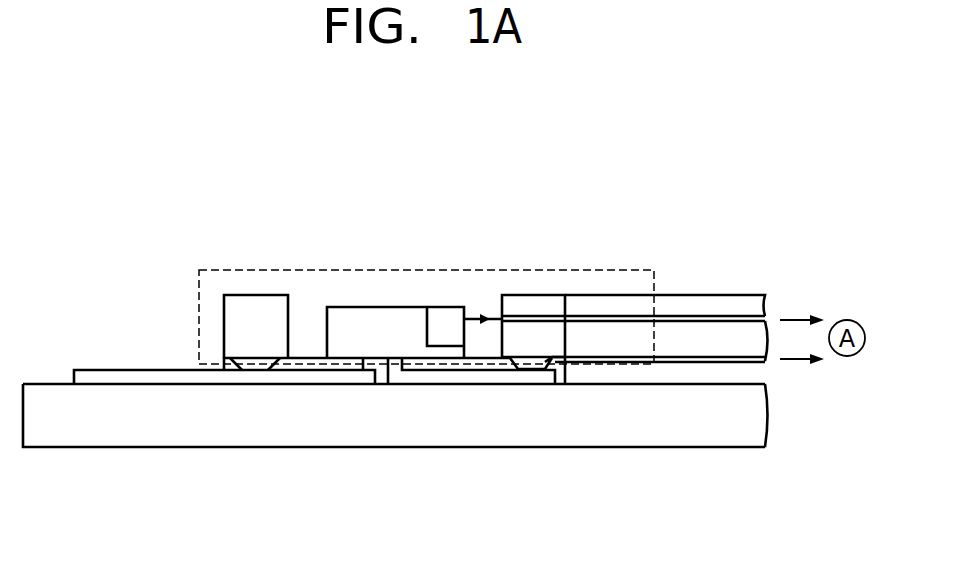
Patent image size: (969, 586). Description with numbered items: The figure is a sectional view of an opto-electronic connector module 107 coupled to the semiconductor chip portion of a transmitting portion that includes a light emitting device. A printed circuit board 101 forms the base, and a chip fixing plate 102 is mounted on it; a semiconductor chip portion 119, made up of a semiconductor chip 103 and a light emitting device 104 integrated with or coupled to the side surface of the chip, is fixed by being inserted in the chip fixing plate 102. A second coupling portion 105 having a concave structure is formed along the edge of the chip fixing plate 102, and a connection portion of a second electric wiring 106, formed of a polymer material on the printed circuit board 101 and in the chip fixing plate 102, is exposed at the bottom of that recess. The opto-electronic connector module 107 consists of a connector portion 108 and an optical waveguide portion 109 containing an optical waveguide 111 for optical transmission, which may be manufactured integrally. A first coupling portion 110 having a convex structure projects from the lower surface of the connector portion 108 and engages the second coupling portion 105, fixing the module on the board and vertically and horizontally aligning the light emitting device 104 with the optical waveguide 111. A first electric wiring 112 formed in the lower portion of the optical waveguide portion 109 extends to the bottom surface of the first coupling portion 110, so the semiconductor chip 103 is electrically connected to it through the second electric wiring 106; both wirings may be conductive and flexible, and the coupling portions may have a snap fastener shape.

The printed circuit board 101 is at (593, 427).
The chip fixing plate 102 is at (300, 370).
The semiconductor chip 103 is at (344, 348).
The light emitting device 104 is at (445, 338).
The second coupling portion 105 is at (228, 373).
The second electric wiring 106 is at (160, 380).
The opto-electronic connector module 107 is at (428, 270).
The connector portion 108 is at (537, 297).
The optical waveguide portion 109 is at (748, 305).
The first coupling portion 110 is at (527, 370).
The optical waveguide 111 is at (615, 317).
The first electric wiring 112 is at (697, 350).
The semiconductor chip portion 119 is at (342, 518).